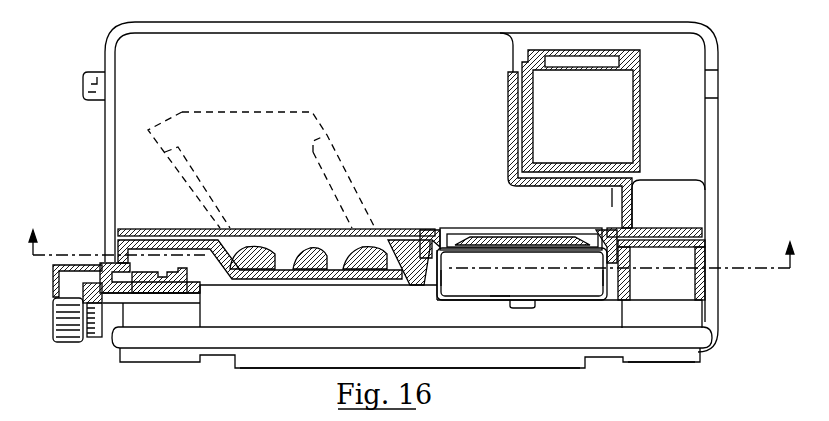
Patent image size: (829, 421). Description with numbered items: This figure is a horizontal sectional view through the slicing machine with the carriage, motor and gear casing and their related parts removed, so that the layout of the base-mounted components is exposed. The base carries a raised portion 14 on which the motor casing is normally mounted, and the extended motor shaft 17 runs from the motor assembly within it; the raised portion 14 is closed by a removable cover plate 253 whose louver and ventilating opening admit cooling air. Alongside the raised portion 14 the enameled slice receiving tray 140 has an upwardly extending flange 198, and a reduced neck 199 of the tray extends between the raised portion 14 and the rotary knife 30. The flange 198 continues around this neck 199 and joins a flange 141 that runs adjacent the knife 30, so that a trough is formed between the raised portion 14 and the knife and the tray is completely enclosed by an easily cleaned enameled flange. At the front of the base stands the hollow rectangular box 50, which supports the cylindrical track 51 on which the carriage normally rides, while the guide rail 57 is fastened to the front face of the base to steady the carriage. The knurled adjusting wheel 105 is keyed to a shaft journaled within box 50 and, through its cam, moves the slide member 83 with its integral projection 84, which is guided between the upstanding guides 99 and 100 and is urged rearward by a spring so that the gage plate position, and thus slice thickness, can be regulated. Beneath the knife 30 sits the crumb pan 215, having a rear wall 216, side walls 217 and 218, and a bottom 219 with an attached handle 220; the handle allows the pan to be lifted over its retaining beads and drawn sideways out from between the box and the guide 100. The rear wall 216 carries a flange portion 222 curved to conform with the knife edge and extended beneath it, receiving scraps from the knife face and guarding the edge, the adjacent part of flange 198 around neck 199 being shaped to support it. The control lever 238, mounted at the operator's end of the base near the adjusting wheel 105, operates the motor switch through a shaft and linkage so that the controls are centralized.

The slice receiving tray 140 is at (411, 187).
The control lever 238 is at (90, 102).
The projection of slide member 84 is at (244, 112).
The motor shaft 17 is at (414, 237).
The upwardly extending flange 198 is at (509, 140).
The raised portion 14 is at (521, 98).
The removable cover plate 253 is at (641, 54).
The neck of slice tray 199 is at (612, 207).
The flange adjacent knife 141 is at (136, 229).
The flange portion of rear wall 222 is at (440, 229).
The rear wall of crumb pan 216 is at (470, 250).
The rotary knife 30 is at (476, 233).
The crumb pan 215 is at (546, 298).
The side wall of crumb pan 217 is at (438, 282).
The side wall of crumb pan 218 is at (614, 281).
The bottom of crumb pan 219 is at (497, 288).
The handle 220 is at (526, 309).
The slide member 83 is at (322, 279).
The guide 100 is at (418, 281).
The guide 99 is at (230, 281).
The knurled adjusting wheel 105 is at (55, 343).
The hollow rectangular box 50 is at (150, 355).
The guide rail 57 is at (552, 370).
The track 51 is at (662, 343).